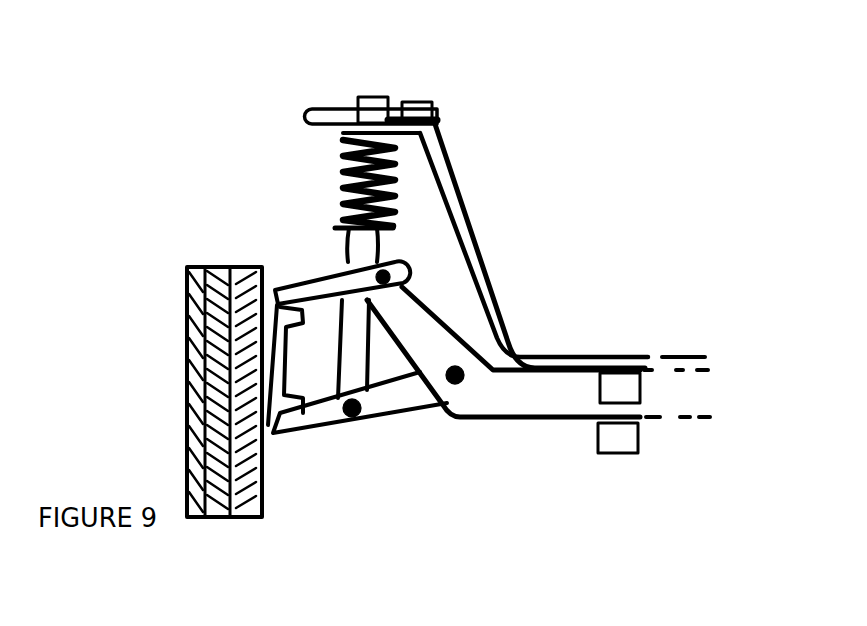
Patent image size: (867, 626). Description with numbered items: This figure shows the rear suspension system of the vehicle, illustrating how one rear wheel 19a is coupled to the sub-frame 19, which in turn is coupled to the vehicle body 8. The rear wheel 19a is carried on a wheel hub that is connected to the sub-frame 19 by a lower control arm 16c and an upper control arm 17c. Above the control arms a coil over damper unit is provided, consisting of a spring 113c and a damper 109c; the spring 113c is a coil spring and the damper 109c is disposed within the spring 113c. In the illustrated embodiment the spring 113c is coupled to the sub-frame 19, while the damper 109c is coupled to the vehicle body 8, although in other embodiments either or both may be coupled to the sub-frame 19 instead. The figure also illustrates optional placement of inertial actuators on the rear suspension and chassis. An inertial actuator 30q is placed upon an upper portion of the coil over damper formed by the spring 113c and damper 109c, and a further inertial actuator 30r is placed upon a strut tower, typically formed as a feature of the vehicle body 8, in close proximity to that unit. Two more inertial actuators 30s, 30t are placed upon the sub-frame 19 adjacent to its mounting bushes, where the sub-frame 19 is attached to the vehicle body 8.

The vehicle body 8 is at (470, 217).
The rear wheel 19a is at (182, 337).
The upper control arm 17c is at (317, 265).
The lower control arm 16c is at (400, 400).
The sub-frame 19 is at (523, 408).
The spring 113c is at (343, 158).
The damper 109c is at (342, 195).
The inertial actuator 30q is at (372, 97).
The inertial actuator 30r is at (433, 107).
The inertial actuator 30s is at (617, 453).
The inertial actuator 30t is at (642, 392).